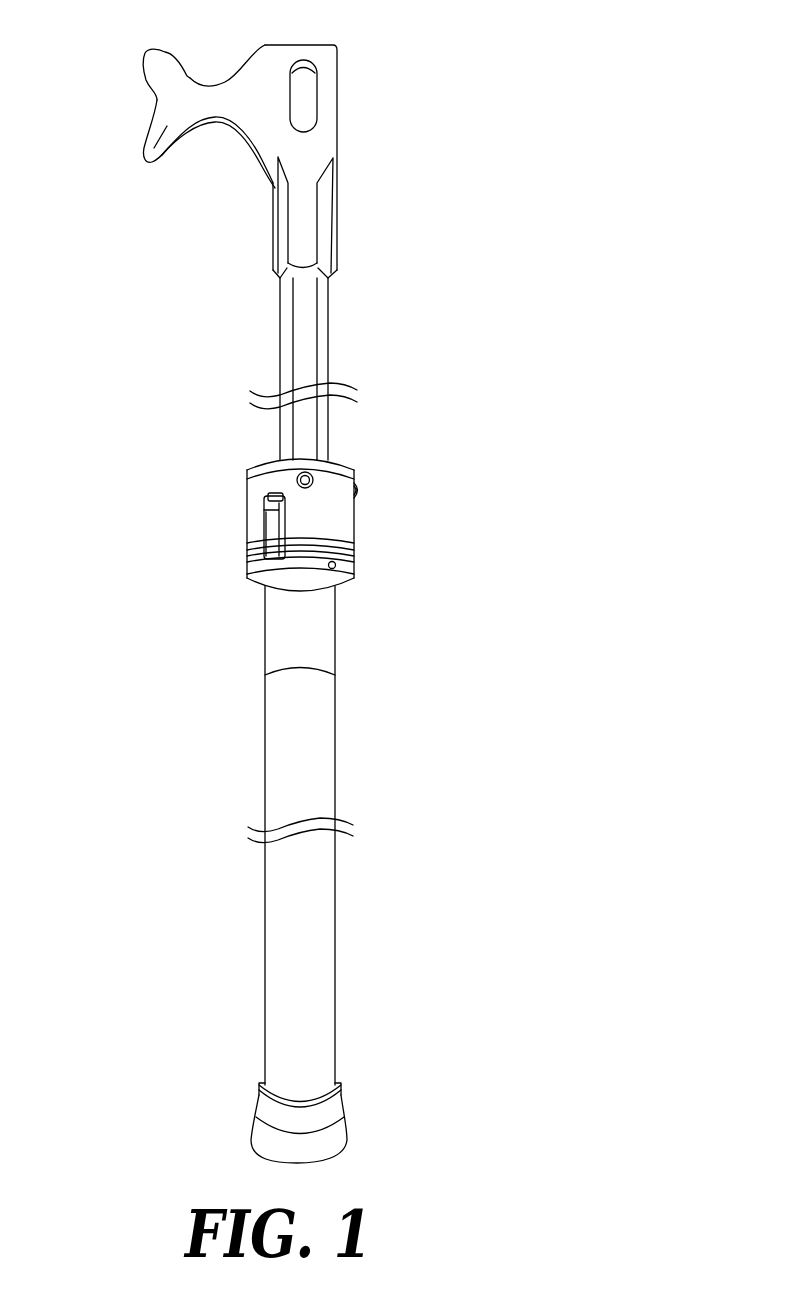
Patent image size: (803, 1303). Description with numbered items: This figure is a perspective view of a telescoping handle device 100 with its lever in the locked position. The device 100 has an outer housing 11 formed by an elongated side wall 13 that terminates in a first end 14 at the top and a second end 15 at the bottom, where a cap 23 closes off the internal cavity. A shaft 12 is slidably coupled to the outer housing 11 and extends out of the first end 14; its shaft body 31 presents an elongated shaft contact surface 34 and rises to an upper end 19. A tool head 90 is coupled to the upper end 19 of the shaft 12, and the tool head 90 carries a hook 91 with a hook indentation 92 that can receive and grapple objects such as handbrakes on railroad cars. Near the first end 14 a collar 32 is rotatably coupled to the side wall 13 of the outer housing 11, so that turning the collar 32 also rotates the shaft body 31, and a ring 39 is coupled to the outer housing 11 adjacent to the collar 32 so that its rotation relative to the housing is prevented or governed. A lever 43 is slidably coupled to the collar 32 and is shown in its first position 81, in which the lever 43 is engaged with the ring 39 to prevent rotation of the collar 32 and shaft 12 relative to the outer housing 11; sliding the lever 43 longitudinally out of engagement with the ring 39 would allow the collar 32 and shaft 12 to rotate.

The telescoping handle device 100 is at (456, 72).
The tool head 90 is at (338, 98).
The hook 91 is at (143, 156).
The hook indentation 92 is at (155, 83).
The upper end 19 is at (345, 285).
The shaft contact surface 34 is at (280, 308).
The shaft 12 is at (282, 357).
The shaft body 31 is at (328, 352).
The collar 32 is at (312, 522).
The first position 81 is at (252, 520).
The lever 43 is at (272, 535).
The ring 39 is at (260, 586).
The first end 14 is at (355, 616).
The outer housing 11 is at (265, 762).
The side wall 13 is at (313, 938).
The second end 15 is at (247, 1080).
The cap 23 is at (327, 1142).